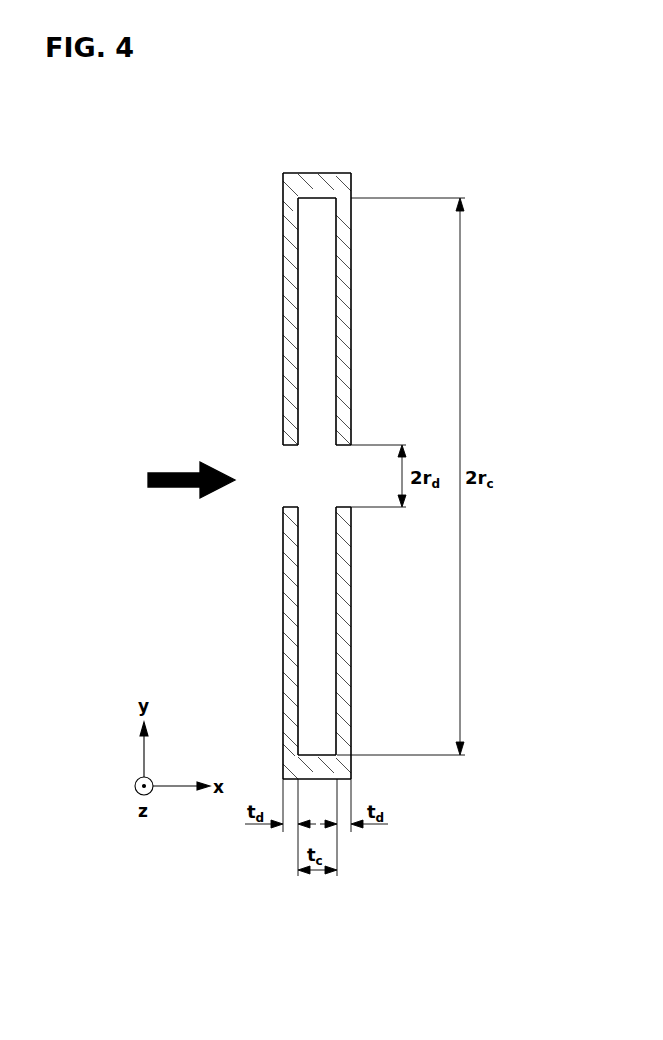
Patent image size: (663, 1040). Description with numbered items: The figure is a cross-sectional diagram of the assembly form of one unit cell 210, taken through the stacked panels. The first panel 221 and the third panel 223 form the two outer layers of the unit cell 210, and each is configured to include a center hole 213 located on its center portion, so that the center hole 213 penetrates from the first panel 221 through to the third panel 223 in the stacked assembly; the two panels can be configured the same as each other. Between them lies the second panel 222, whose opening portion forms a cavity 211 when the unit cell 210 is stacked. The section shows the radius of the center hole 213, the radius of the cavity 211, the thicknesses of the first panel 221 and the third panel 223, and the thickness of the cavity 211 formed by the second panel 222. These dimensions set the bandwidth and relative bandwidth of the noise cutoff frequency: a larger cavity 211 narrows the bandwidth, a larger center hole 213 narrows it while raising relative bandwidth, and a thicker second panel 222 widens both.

The unit cell 210 is at (252, 121).
The cavity 211 is at (316, 354).
The center hole 213 is at (292, 466).
The first panel 221 is at (288, 364).
The second panel 222 is at (316, 172).
The third panel 223 is at (352, 178).